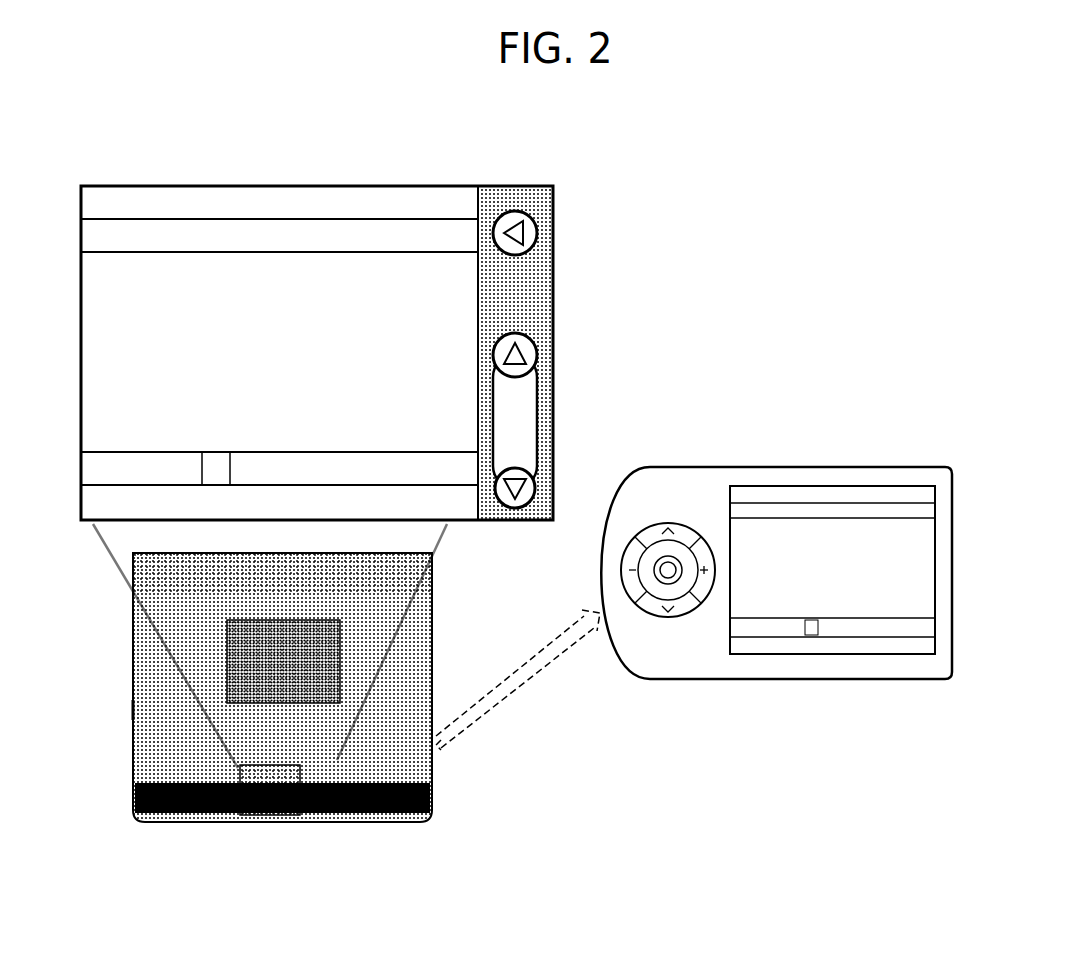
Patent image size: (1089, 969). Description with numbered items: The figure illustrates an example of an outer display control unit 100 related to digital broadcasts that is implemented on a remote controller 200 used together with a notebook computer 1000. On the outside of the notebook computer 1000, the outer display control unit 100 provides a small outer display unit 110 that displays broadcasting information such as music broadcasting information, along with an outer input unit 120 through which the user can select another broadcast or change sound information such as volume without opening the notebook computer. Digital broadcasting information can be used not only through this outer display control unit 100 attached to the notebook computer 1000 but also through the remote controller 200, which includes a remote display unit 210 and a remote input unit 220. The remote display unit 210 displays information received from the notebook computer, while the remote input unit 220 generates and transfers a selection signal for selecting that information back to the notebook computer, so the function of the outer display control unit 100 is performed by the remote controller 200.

The outer display control unit 100 is at (372, 307).
The outer display unit 110 is at (315, 195).
The outer input unit 120 is at (510, 200).
The notebook computer 1000 is at (170, 812).
The remote controller 200 is at (953, 527).
The remote display unit 210 is at (892, 493).
The remote input unit 220 is at (652, 607).